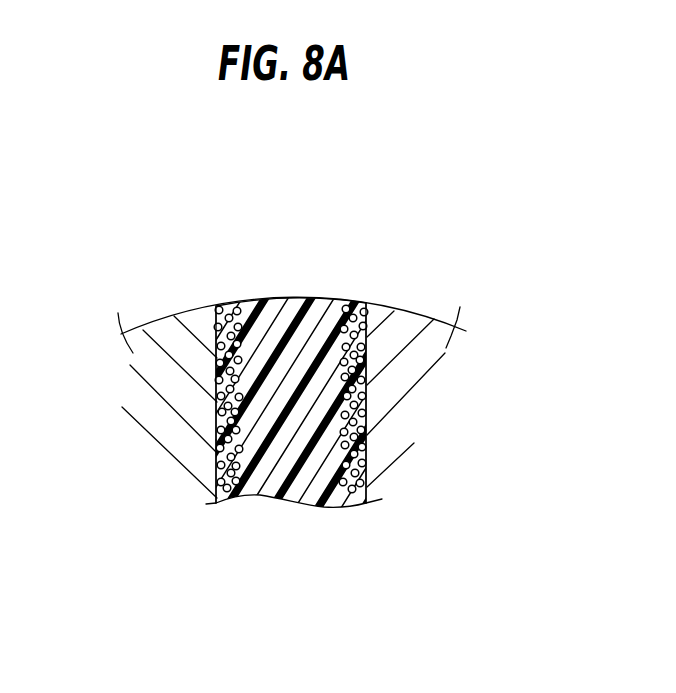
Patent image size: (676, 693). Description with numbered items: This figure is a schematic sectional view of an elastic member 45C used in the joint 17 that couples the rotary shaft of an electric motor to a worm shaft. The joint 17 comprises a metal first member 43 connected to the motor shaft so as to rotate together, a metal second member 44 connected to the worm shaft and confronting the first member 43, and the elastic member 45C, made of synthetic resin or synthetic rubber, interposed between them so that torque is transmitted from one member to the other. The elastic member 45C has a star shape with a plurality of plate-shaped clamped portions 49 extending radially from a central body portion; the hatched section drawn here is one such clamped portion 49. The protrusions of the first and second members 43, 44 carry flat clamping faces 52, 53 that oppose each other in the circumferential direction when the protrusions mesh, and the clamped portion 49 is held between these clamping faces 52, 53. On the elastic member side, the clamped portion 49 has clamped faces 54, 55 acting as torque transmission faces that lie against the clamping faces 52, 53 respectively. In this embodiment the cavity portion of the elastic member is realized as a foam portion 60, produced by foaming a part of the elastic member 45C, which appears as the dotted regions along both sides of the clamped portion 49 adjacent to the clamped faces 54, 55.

The joint 17 is at (387, 208).
The first member 43 is at (168, 316).
The second member 44 is at (410, 312).
The elastic member 45C is at (287, 298).
The clamped portion 49 is at (288, 490).
The clamping face 52 is at (217, 403).
The clamping face 53 is at (367, 410).
The clamped face 54 is at (217, 458).
The clamped face 55 is at (367, 447).
The foam portion 60 is at (234, 310).